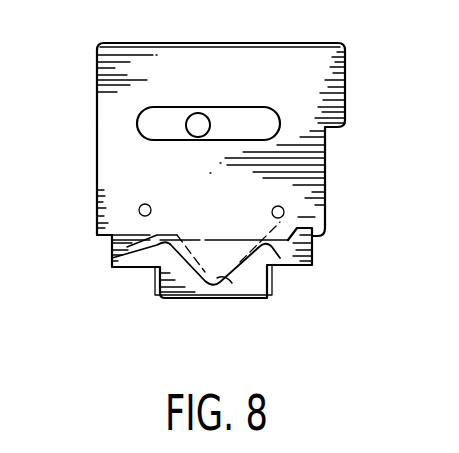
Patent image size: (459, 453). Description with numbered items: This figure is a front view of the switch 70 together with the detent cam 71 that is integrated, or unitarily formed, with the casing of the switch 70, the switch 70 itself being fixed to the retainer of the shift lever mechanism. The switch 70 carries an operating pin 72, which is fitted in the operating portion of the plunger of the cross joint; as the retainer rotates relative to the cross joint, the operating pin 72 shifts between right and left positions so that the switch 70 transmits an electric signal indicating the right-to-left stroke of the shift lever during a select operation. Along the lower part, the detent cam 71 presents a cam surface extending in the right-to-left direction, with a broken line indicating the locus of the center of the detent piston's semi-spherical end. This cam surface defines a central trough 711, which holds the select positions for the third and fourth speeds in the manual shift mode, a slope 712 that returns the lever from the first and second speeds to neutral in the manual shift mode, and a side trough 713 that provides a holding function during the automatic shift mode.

The switch 70 is at (351, 80).
The detent cam 71 is at (313, 250).
The operating pin 72 is at (204, 113).
The central trough 711 is at (235, 278).
The slope 712 is at (279, 250).
The trough 713 is at (128, 255).